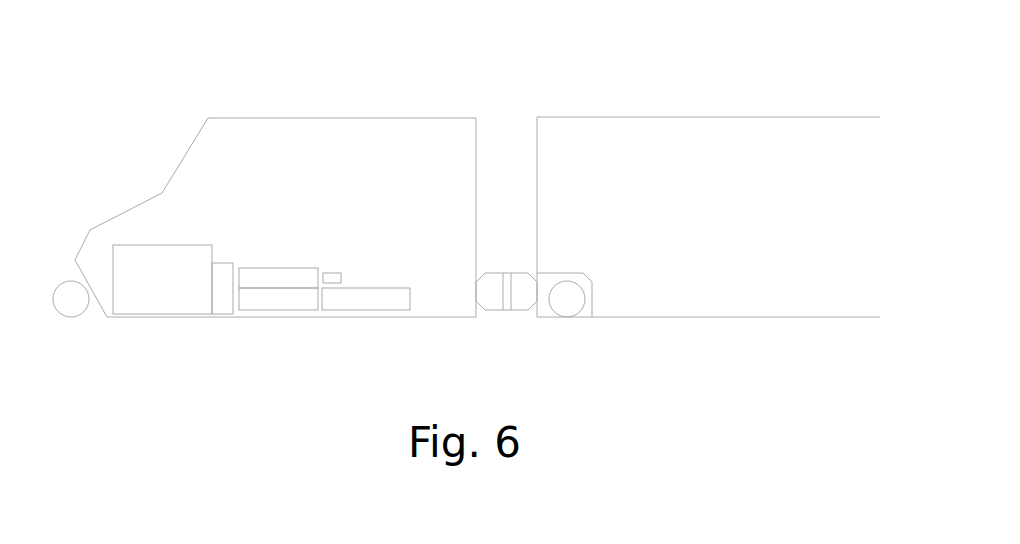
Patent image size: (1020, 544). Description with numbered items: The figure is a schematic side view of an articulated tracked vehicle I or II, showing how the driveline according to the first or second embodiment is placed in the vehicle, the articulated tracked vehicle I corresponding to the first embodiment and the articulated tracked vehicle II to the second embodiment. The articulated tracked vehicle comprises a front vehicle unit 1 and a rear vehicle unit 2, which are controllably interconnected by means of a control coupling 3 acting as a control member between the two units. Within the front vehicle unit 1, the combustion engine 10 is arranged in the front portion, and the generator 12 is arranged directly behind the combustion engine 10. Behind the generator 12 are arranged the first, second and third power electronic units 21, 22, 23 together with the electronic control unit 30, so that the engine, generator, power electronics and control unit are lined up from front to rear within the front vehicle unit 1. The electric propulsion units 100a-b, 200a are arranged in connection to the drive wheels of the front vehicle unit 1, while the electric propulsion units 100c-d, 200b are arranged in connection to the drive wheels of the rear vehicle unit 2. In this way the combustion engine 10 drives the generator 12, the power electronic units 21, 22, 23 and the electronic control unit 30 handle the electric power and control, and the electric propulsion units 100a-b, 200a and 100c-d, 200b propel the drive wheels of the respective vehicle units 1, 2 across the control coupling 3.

The front vehicle unit 1 is at (258, 229).
The rear vehicle unit 2 is at (707, 233).
The control coupling 3 is at (500, 260).
The combustion engine 10 is at (172, 296).
The generator 12 is at (226, 272).
The first power electronic unit 21 is at (278, 278).
The second power electronic unit 22 is at (378, 298).
The third power electronic unit 23 is at (278, 298).
The electronic control unit 30 is at (330, 272).
The electric propulsion units 100a-b is at (78, 340).
The electric propulsion unit 200a is at (70, 298).
The electric propulsion units 100c-d is at (573, 344).
The electric propulsion unit 200b is at (568, 306).
The articulated tracked vehicle I is at (460, 213).
The articulated tracked vehicle II is at (460, 213).